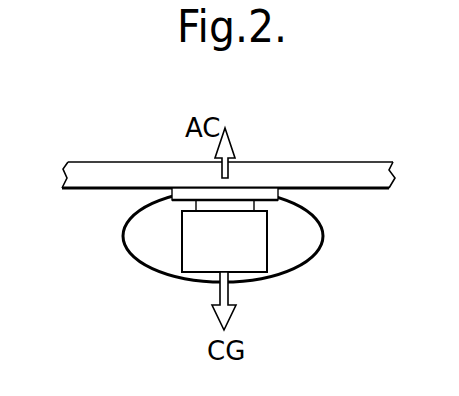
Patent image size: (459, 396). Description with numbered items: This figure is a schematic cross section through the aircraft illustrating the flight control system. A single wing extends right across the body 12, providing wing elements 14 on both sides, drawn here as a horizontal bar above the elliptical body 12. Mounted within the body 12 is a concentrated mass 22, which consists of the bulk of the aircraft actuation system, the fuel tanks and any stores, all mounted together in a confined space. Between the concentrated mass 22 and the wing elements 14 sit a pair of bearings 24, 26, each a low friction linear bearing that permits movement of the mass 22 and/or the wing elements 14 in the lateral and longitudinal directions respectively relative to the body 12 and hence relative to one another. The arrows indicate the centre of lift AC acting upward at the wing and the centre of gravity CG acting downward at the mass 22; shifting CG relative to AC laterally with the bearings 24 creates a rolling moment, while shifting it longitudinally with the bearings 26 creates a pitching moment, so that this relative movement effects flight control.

The body 12 is at (283, 277).
The wing elements 14 is at (92, 175).
The concentrated mass 22 is at (182, 252).
The bearing 24 is at (243, 205).
The bearing 26 is at (270, 192).